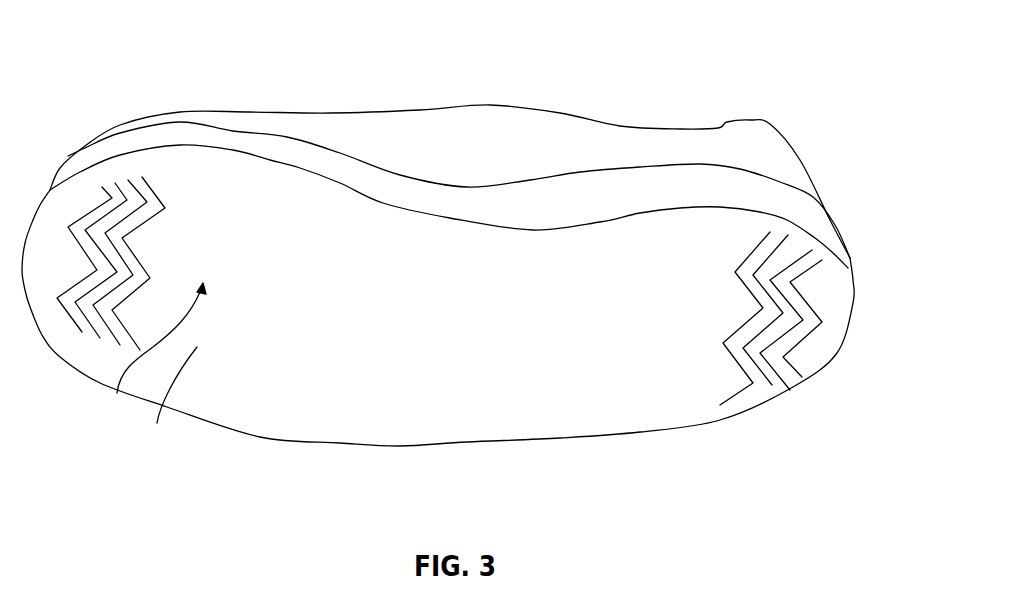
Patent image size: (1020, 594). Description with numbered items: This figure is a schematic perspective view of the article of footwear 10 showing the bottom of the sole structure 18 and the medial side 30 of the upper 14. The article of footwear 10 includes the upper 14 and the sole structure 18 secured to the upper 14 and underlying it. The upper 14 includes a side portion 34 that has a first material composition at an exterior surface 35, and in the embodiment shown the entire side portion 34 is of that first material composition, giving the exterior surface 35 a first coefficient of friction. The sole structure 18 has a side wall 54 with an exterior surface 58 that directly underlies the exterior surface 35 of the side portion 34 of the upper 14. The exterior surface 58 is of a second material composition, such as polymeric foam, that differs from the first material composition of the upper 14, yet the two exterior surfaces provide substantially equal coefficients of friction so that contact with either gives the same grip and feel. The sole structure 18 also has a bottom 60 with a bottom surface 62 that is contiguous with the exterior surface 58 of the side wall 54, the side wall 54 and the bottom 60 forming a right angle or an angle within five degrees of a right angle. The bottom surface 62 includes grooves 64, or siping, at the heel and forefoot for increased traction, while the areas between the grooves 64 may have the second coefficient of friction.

The article of footwear 10 is at (135, 45).
The upper 14 is at (665, 112).
The sole structure 18 is at (853, 260).
The medial side 30 is at (502, 143).
The side portion 34 is at (334, 138).
The exterior surface 35 is at (312, 127).
The side wall 54 is at (267, 147).
The exterior surface 58 is at (235, 141).
The bottom 60 is at (169, 401).
The bottom surface 62 is at (153, 357).
The grooves 64 is at (137, 350).